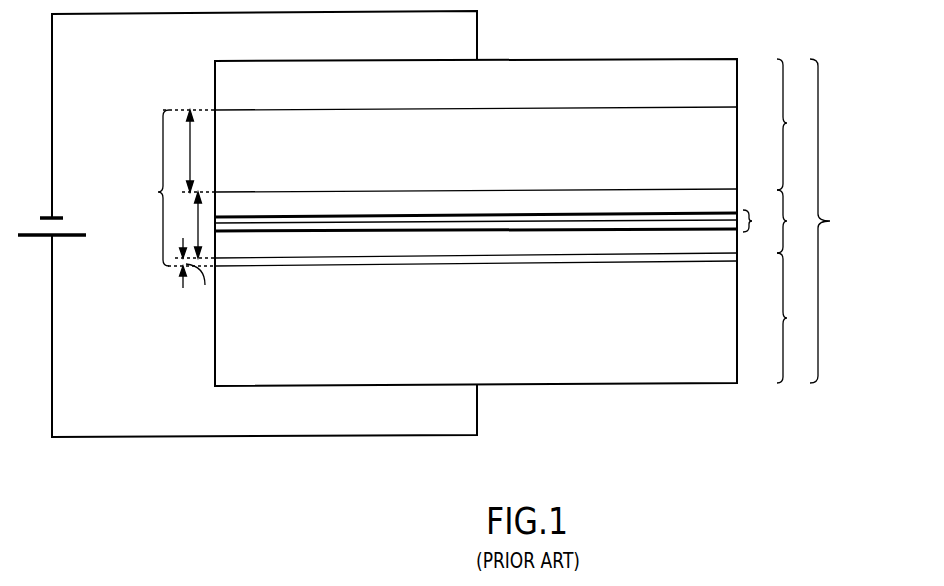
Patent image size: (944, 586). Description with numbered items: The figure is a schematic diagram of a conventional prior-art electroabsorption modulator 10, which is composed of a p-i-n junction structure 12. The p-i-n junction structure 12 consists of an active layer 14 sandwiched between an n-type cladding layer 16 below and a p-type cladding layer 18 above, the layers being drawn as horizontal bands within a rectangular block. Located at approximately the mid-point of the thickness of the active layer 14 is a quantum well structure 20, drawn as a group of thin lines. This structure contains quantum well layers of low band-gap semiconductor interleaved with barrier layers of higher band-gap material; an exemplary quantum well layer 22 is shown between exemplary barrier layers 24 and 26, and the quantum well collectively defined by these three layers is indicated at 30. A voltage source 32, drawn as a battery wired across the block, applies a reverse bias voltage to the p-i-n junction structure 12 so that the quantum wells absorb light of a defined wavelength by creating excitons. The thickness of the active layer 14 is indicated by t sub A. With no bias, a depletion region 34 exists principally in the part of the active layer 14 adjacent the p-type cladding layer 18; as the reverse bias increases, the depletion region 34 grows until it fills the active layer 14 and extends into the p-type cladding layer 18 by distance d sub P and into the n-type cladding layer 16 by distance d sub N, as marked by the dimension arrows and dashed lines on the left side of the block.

The electroabsorption modulator 10 is at (724, 52).
The p-i-n junction structure 12 is at (835, 221).
The active layer 14 is at (514, 224).
The n-type cladding layer 16 is at (514, 318).
The p-type cladding layer 18 is at (514, 125).
The quantum well structure 20 is at (499, 230).
The quantum well layer 22 is at (247, 219).
The barrier layer 24 is at (268, 231).
The barrier layer 26 is at (275, 221).
The quantum well 30 is at (305, 212).
The voltage source 32 is at (58, 238).
The depletion region 34 is at (173, 210).